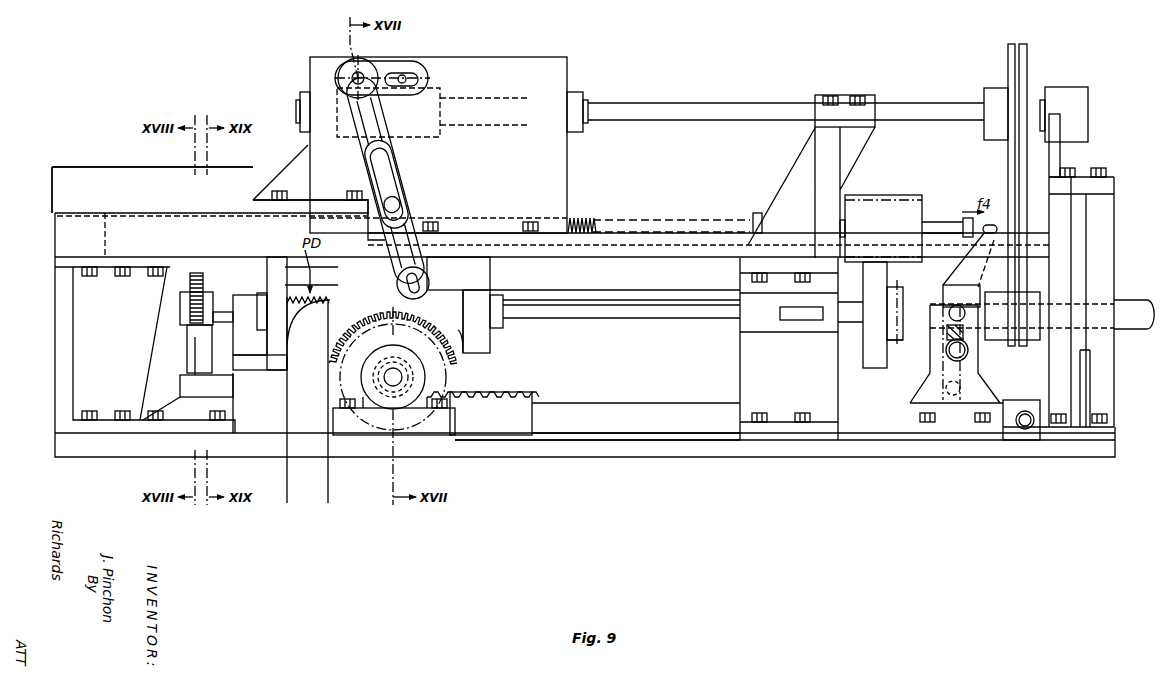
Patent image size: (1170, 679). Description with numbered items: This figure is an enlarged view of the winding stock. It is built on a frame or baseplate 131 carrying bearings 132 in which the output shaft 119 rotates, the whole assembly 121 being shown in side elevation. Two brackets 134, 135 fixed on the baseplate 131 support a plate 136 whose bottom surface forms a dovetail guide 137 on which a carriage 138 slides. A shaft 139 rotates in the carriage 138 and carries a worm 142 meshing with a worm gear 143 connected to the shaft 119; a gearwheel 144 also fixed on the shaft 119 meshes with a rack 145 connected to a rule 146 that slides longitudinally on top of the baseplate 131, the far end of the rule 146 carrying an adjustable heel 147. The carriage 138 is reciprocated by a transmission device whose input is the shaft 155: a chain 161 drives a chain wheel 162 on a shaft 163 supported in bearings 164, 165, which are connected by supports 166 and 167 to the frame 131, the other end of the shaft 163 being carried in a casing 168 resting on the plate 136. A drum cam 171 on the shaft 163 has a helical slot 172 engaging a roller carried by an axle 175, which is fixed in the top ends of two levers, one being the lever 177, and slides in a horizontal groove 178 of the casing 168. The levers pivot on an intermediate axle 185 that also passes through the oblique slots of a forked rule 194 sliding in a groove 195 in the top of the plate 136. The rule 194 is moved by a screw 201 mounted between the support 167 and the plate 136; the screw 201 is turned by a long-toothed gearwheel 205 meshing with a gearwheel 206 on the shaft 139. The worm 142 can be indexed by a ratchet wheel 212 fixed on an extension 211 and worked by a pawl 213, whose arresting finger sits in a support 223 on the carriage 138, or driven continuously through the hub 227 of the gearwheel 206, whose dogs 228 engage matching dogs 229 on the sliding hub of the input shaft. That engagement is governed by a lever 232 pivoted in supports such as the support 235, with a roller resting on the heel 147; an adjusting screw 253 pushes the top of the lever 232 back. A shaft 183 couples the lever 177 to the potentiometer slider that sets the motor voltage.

The shaft 119 is at (398, 384).
The base frame 121 is at (55, 433).
The frame 131 is at (615, 450).
The bearings 132 is at (372, 406).
The bracket 134 is at (135, 283).
The bracket 135 is at (788, 380).
The plate 136 is at (558, 250).
The dovetail guide 137 is at (658, 260).
The carriage 138 is at (477, 275).
The shaft 139 is at (537, 320).
The worm 142 is at (450, 340).
The worm gear 143 is at (340, 368).
The gearwheel 144 is at (400, 377).
The rack 145 is at (500, 393).
The rule 146 is at (594, 412).
The heel 147 is at (1040, 441).
The shaft 155 is at (1131, 309).
The chain 161 is at (1023, 192).
The chain wheel 162 is at (1027, 58).
The shaft 163 is at (918, 113).
The bearing 164 is at (1078, 97).
The bearing 165 is at (845, 96).
The support 166 is at (1097, 229).
The support 167 is at (797, 175).
The casing 168 is at (538, 72).
The drum cam 171 is at (440, 137).
The helical slot 172 is at (420, 80).
The axle 175 is at (337, 78).
The lever 177 is at (308, 145).
The horizontal groove 178 is at (410, 60).
The shaft 183 is at (430, 280).
The intermediate axle 185 is at (397, 208).
The rule 194 is at (72, 176).
The groove 195 is at (105, 213).
The screw 201 is at (587, 219).
The long-toothed gearwheel 205 is at (889, 196).
The gearwheel 206 is at (877, 357).
The extension 211 is at (258, 295).
The ratchet wheel 212 is at (201, 285).
The pawl 213 is at (195, 315).
The support 223 is at (260, 362).
The hub 227 is at (893, 341).
The dogs 228 is at (912, 304).
The dogs 229 is at (950, 283).
The lever 232 is at (990, 232).
The support 235 is at (973, 388).
The adjusting screw 253 is at (946, 227).